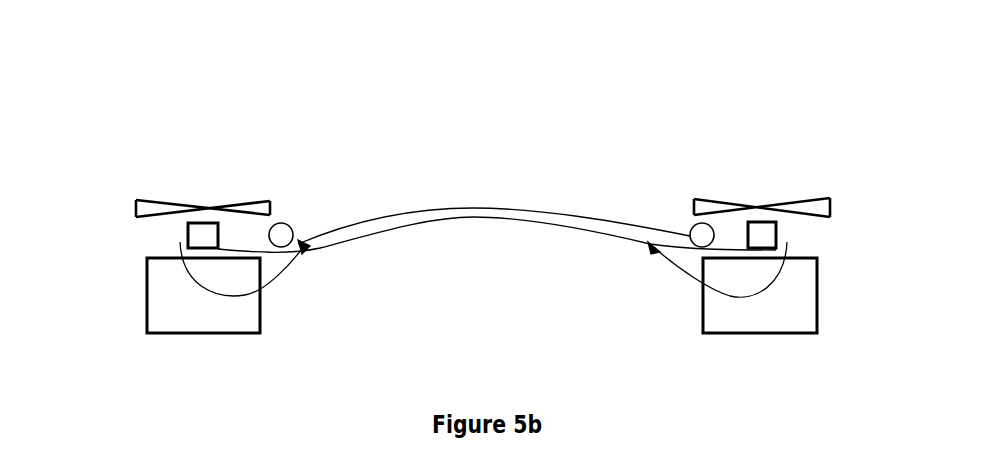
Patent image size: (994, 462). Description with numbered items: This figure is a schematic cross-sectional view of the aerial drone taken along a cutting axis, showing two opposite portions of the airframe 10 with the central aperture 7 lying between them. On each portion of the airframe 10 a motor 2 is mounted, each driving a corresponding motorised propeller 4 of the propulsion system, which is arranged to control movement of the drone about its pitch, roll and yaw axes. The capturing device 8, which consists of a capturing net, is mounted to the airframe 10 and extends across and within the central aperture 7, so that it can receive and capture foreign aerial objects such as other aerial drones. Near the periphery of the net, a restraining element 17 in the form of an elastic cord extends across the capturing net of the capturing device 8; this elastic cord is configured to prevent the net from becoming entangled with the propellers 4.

The motor 2 is at (776, 233).
The motorised propeller 4 is at (258, 200).
The central aperture 7 is at (482, 313).
The capturing device 8 is at (473, 207).
The airframe 10 is at (200, 313).
The restraining element 17 is at (690, 233).